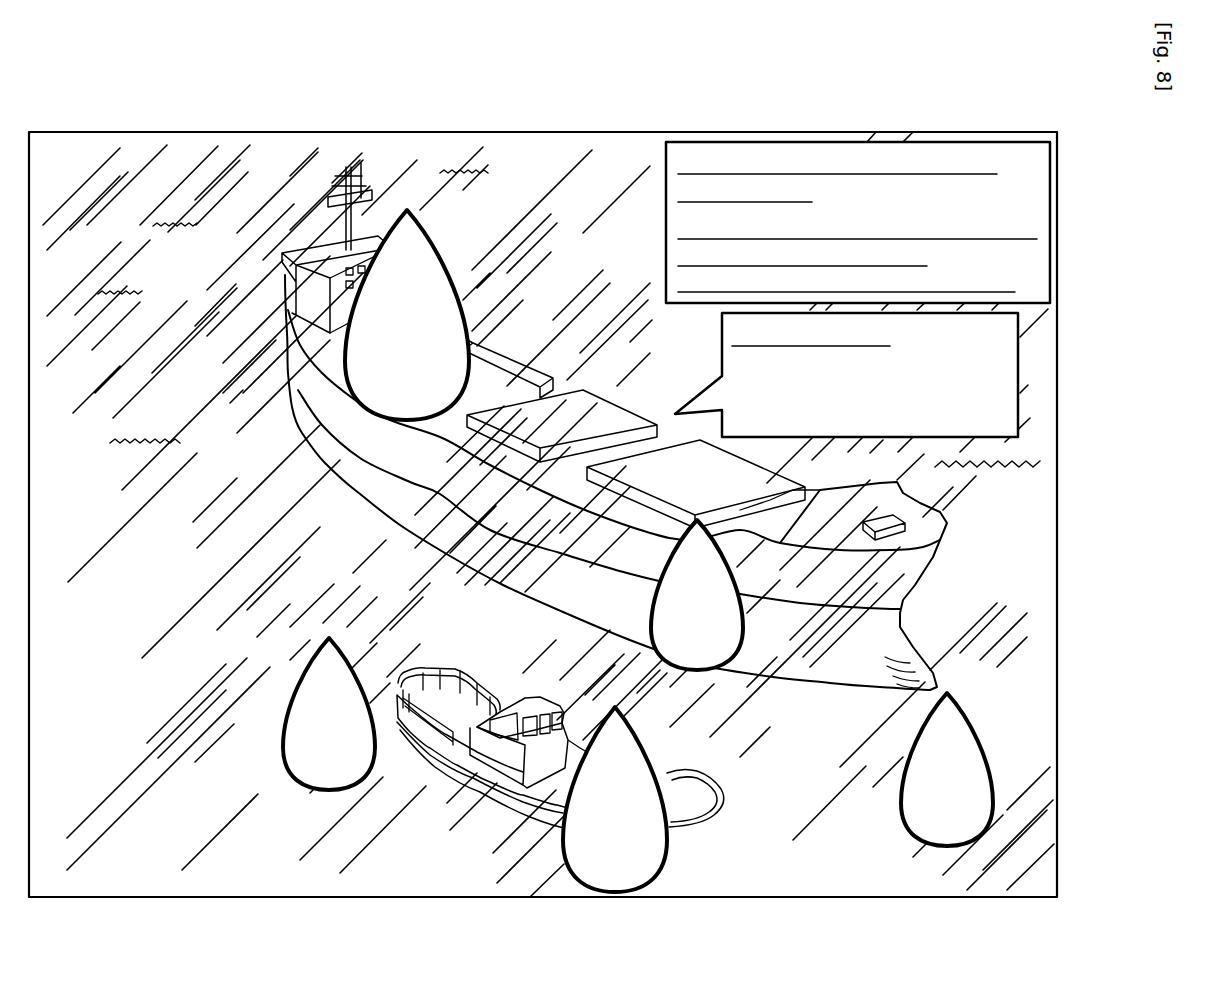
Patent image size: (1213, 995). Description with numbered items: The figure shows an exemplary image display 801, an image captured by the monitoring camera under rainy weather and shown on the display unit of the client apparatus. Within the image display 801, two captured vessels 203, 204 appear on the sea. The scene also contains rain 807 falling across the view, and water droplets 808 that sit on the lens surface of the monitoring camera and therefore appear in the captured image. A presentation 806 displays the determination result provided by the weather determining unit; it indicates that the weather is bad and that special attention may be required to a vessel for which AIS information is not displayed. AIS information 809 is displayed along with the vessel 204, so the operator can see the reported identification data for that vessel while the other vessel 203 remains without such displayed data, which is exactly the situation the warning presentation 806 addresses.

The image display 801 is at (147, 131).
The presentation 806 is at (665, 235).
The AIS information 809 is at (722, 336).
The vessel 204 is at (926, 584).
The vessel 203 is at (726, 801).
The water droplets 808 is at (910, 836).
The rain 807 is at (164, 631).